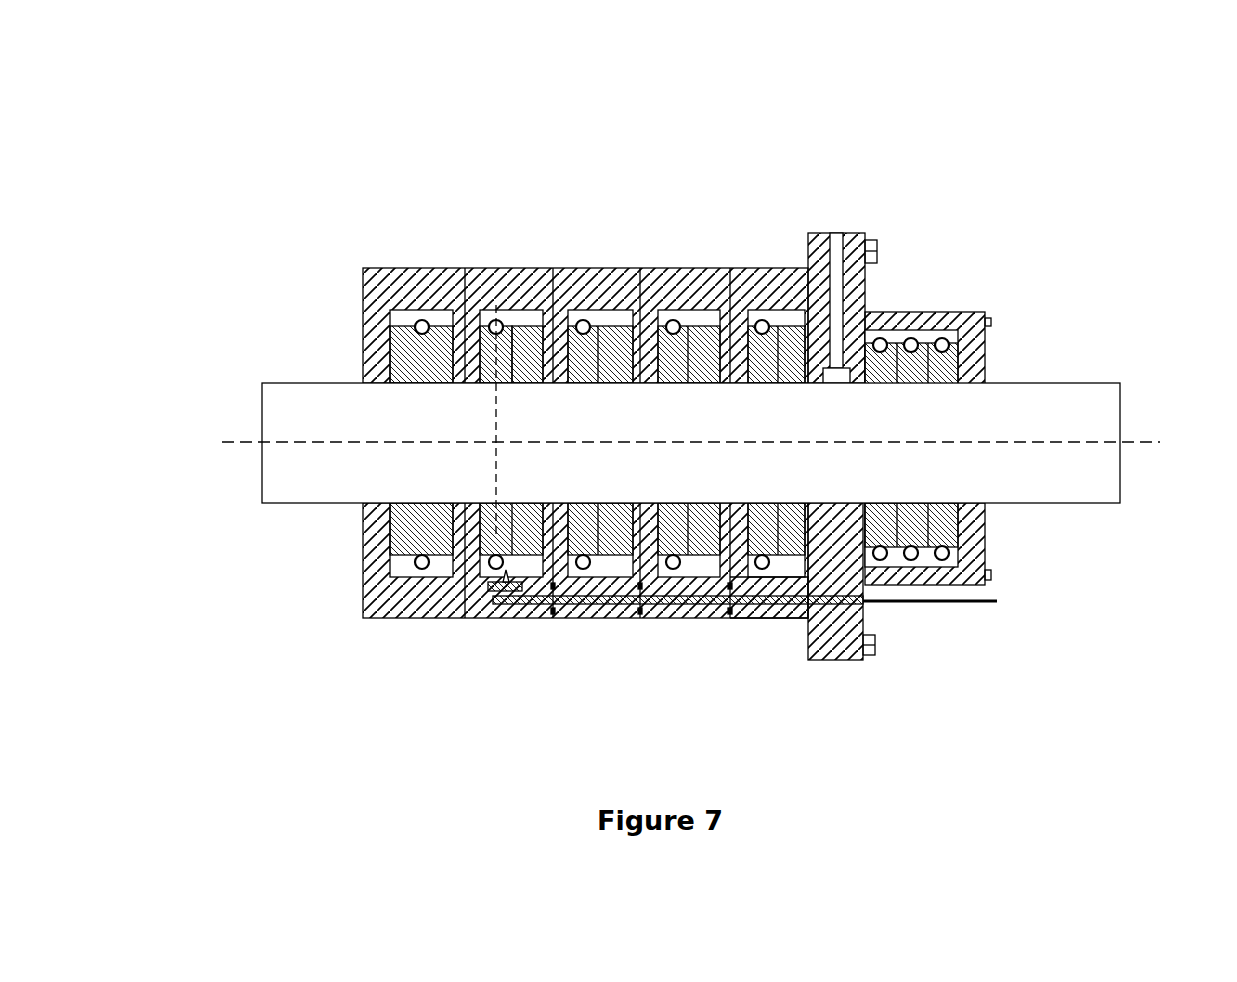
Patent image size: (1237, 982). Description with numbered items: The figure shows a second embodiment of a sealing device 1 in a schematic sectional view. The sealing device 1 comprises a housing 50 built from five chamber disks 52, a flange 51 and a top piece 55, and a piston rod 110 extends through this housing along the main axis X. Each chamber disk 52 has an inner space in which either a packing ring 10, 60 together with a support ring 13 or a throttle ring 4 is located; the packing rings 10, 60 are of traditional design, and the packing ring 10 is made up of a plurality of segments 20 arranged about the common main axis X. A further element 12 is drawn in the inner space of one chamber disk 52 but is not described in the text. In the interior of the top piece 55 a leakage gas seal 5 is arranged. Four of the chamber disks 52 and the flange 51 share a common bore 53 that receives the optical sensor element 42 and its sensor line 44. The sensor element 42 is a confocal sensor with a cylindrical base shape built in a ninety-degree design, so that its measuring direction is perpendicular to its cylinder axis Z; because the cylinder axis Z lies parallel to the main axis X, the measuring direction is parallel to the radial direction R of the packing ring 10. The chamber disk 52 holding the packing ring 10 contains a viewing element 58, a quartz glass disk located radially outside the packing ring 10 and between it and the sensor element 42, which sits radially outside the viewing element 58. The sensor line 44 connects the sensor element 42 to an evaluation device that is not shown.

The sealing device 1 is at (975, 155).
The throttle ring 4 is at (400, 338).
The leakage gas seal 5 is at (923, 335).
The packing ring 10 is at (483, 574).
The inner ring 12 is at (523, 347).
The support ring 13 is at (540, 325).
The segment 20 is at (482, 313).
The sensor element 42 is at (578, 618).
The sensor line 44 is at (937, 603).
The housing 50 is at (315, 636).
The flange 51 is at (848, 253).
The chamber disk 52 is at (363, 280).
The bore 53 is at (757, 620).
The top piece 55 is at (973, 542).
The viewing element 58 is at (490, 585).
The packing ring 60 is at (585, 357).
The piston rod 110 is at (303, 415).
The radial direction R is at (484, 573).
The main axis X is at (1135, 447).
The cylinder axis Z is at (487, 598).